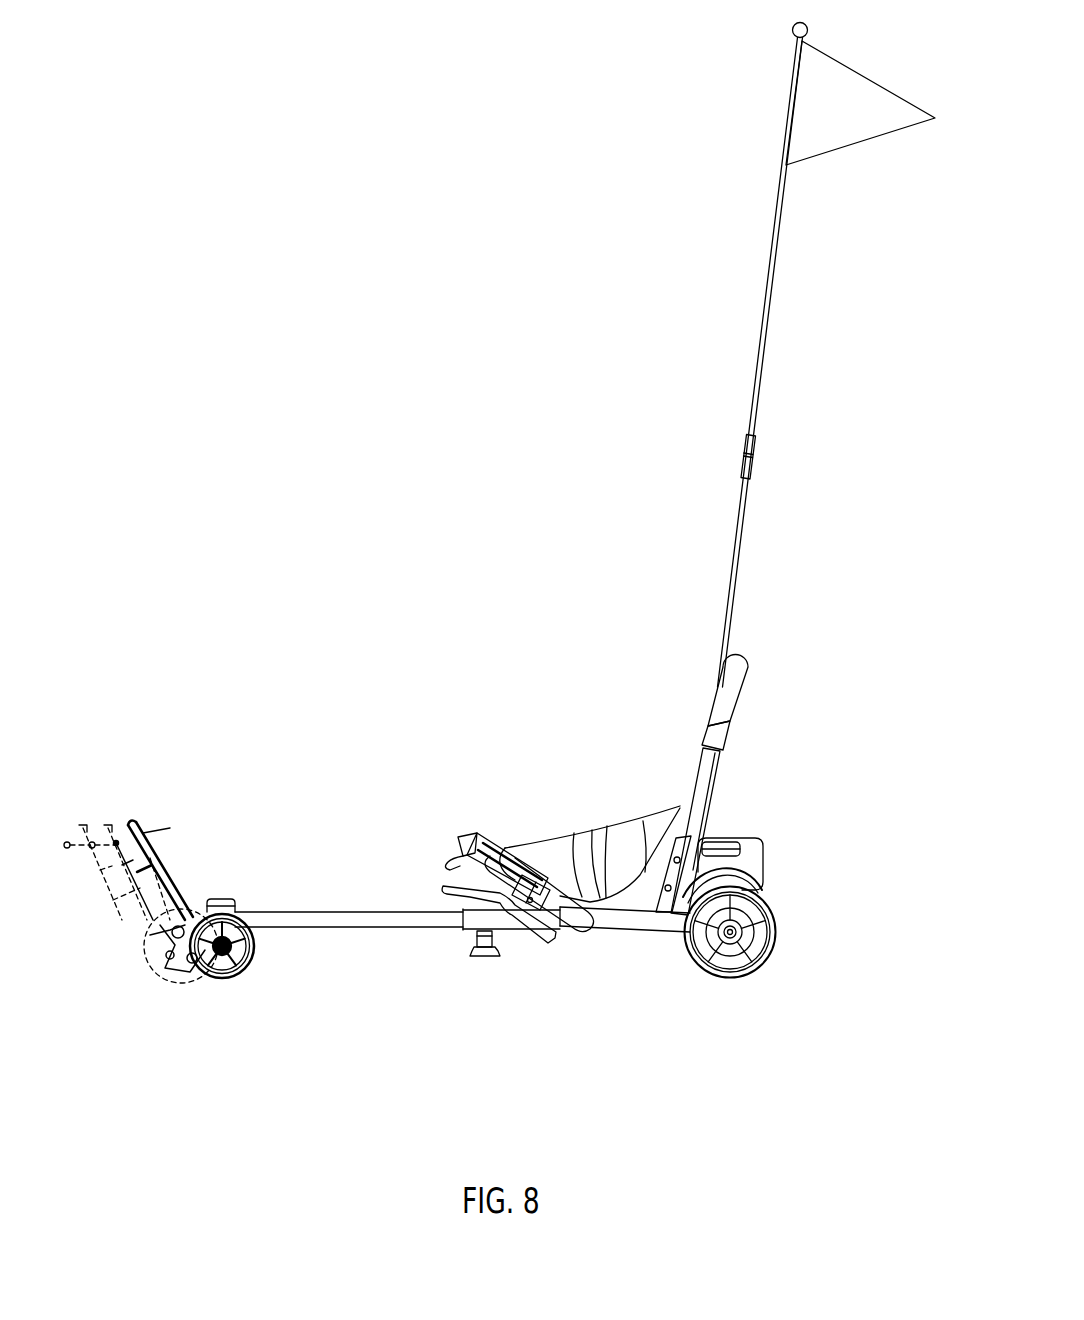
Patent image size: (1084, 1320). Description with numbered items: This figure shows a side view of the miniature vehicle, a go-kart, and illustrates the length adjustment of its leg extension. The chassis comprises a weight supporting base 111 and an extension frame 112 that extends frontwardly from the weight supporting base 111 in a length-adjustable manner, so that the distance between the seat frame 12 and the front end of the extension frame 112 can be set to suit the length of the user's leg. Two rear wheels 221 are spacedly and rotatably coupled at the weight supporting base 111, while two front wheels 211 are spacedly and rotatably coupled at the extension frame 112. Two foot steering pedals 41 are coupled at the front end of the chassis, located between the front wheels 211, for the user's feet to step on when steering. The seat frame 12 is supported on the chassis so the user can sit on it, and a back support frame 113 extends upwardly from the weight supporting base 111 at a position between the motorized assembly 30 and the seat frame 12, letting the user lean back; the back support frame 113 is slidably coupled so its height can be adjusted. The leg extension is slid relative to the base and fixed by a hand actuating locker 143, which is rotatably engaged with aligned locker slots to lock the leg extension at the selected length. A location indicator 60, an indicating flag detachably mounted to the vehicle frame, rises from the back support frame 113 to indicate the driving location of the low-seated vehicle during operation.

The location indicator 60 is at (768, 278).
The back support frame 113 is at (723, 695).
The seat frame 12 is at (553, 862).
The foot steering pedals 41 is at (143, 832).
The extension frame 112 is at (327, 925).
The weight supporting base 111 is at (640, 915).
The motorized assembly 30 is at (738, 842).
The rear wheels 221 is at (777, 942).
The front wheels 211 is at (222, 988).
The hand actuating locker 143 is at (480, 965).